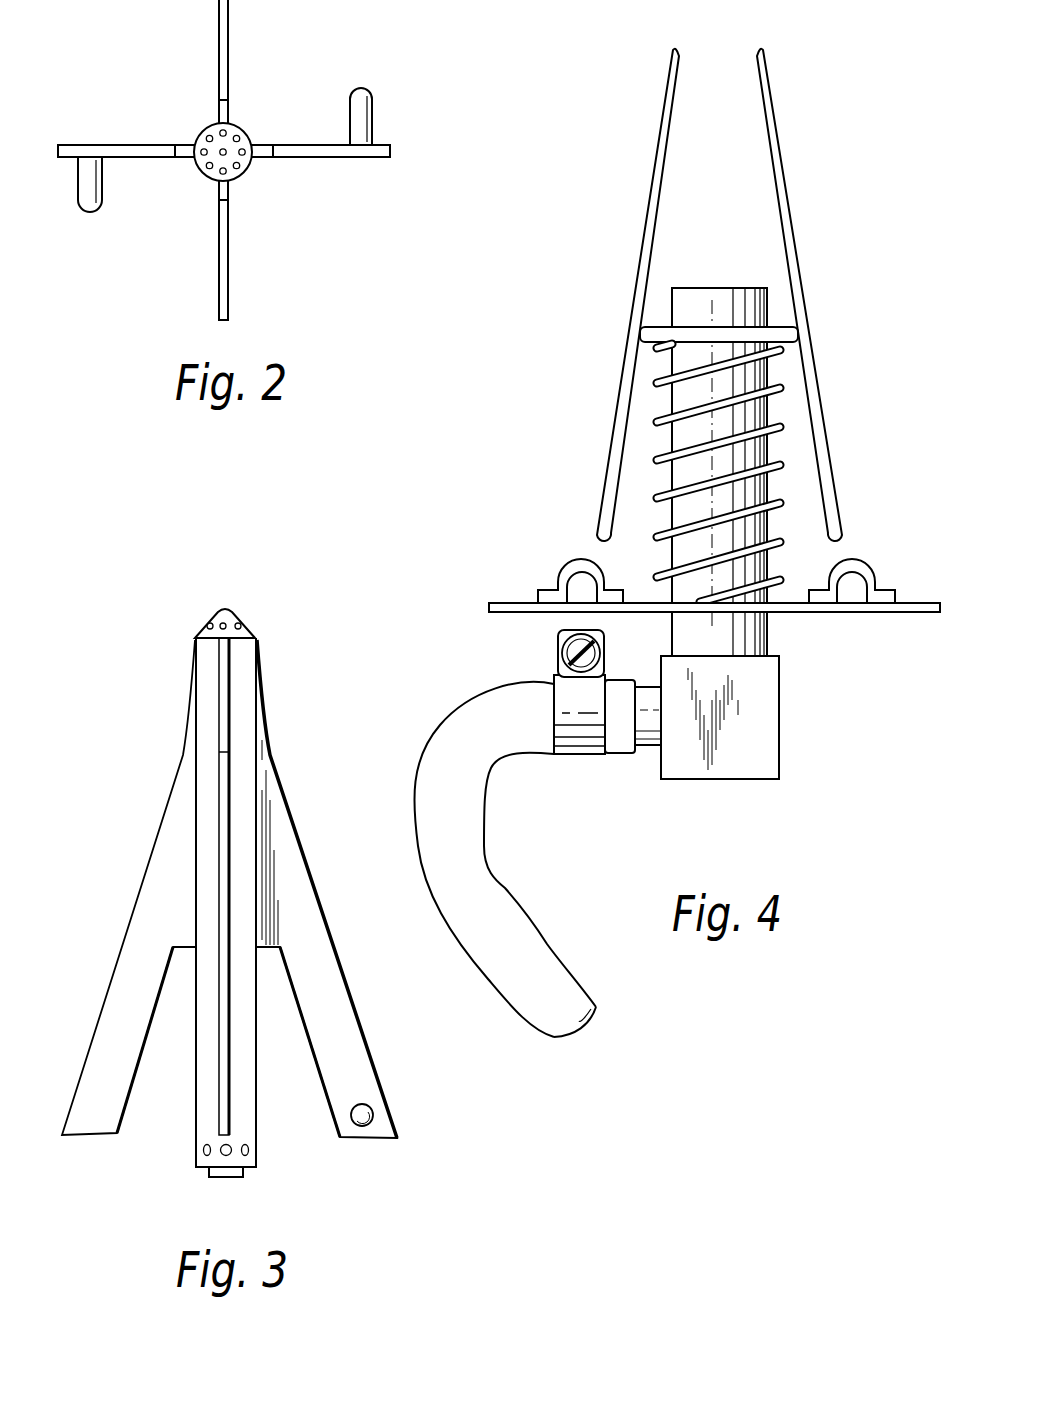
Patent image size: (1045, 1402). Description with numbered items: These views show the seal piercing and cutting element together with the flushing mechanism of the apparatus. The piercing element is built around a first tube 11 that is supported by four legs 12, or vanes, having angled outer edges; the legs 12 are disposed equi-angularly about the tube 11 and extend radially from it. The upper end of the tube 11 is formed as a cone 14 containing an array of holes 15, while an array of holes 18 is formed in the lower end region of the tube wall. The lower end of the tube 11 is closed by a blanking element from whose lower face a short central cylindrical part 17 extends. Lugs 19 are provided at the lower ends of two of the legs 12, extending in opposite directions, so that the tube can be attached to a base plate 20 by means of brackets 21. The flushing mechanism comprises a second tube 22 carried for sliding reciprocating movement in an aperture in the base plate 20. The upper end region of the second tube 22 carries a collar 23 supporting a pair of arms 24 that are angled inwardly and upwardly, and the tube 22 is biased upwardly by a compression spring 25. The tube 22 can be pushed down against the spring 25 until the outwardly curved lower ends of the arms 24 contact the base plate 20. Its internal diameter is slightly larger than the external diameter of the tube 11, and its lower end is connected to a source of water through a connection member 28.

In FIG. 3, the first tube 11 is at (203, 768).
In FIG. 2, the legs 12 is at (213, 60).
In FIG. 3, the legs 12 is at (162, 885).
In FIG. 2, the cone 14 is at (238, 127).
In FIG. 2, the holes 15 is at (226, 170).
In FIG. 3, the central cylindrical part 17 is at (228, 1178).
In FIG. 3, the holes 18 is at (200, 1150).
In FIG. 2, the lugs 19 is at (90, 192).
In FIG. 3, the lugs 19 is at (375, 1114).
In FIG. 4, the base plate 20 is at (790, 607).
In FIG. 4, the brackets 21 is at (563, 567).
In FIG. 4, the second tube 22 is at (723, 298).
In FIG. 4, the collar 23 is at (775, 330).
In FIG. 4, the arms 24 is at (655, 183).
In FIG. 4, the compression spring 25 is at (658, 427).
In FIG. 4, the connection member 28 is at (647, 737).